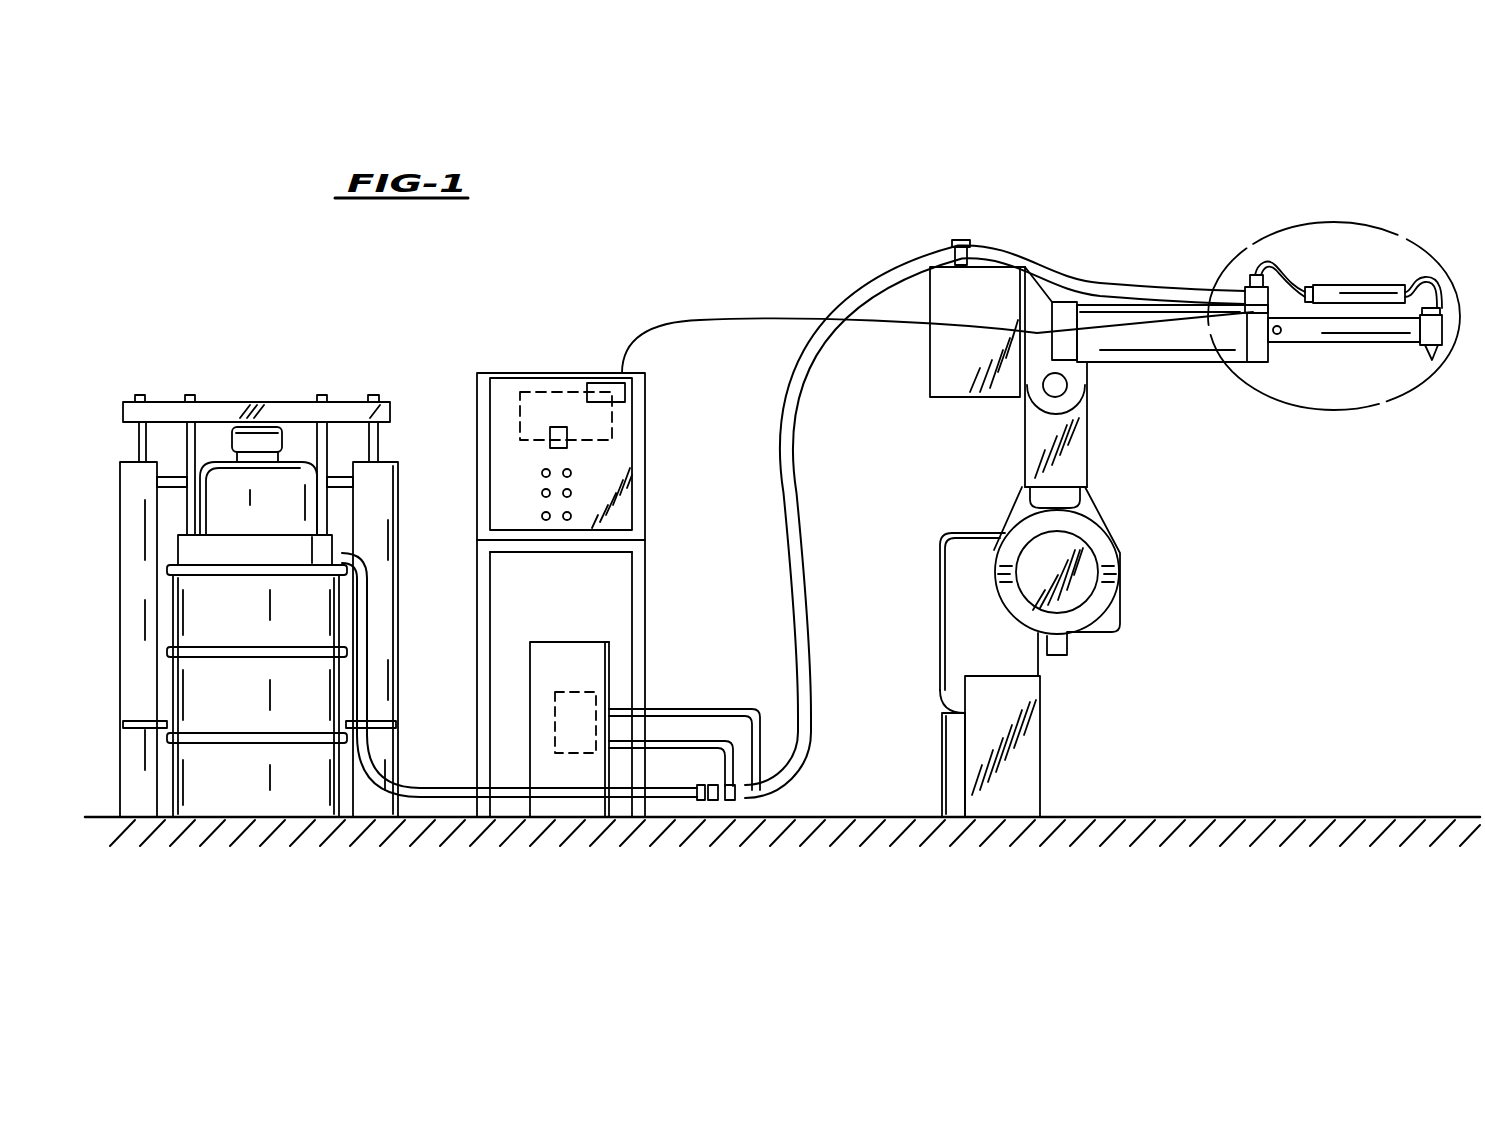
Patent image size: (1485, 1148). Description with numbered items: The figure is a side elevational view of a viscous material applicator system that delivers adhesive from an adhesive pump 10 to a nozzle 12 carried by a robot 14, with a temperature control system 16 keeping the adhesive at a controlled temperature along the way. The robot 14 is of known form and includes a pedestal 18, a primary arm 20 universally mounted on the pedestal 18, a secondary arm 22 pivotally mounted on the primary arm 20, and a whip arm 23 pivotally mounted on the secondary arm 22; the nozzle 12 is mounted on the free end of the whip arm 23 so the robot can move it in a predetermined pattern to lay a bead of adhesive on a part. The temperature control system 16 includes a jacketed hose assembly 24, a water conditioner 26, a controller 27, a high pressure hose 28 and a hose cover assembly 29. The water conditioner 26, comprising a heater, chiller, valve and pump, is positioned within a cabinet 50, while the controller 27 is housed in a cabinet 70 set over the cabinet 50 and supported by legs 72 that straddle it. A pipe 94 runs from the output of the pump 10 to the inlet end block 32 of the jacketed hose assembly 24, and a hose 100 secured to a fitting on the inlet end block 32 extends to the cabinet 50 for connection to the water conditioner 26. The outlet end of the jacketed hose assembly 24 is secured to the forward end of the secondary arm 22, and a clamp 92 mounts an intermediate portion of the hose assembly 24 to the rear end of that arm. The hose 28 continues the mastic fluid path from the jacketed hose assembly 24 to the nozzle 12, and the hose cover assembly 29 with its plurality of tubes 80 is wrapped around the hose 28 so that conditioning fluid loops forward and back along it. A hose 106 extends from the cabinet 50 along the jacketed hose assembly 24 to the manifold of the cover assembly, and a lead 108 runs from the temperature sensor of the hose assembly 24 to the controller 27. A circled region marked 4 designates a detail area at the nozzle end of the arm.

The adhesive pump 10 is at (228, 393).
The pipe 94 is at (365, 657).
The cabinet 70 is at (509, 393).
The controller 27 is at (520, 408).
The legs 72 is at (477, 571).
The cabinet 50 is at (555, 648).
The water conditioner 26 is at (595, 630).
The hose 106 is at (714, 712).
The inlet end block 32 is at (755, 807).
The hose 100 is at (695, 752).
The jacketed hose assembly 24 is at (896, 256).
The clamp 92 is at (960, 240).
The lead 108 is at (698, 318).
The temperature control system 16 is at (824, 258).
The primary arm 20 is at (1033, 432).
The secondary arm 22 is at (1160, 347).
The tubes 80 is at (1297, 237).
The hose cover assembly 29 is at (1378, 268).
The hose 28 is at (660, 485).
The nozzle 12 is at (1445, 355).
The whip arm 23 is at (1320, 333).
The detail view indicator 4 is at (1355, 222).
The robot 14 is at (1133, 596).
The pedestal 18 is at (1025, 722).